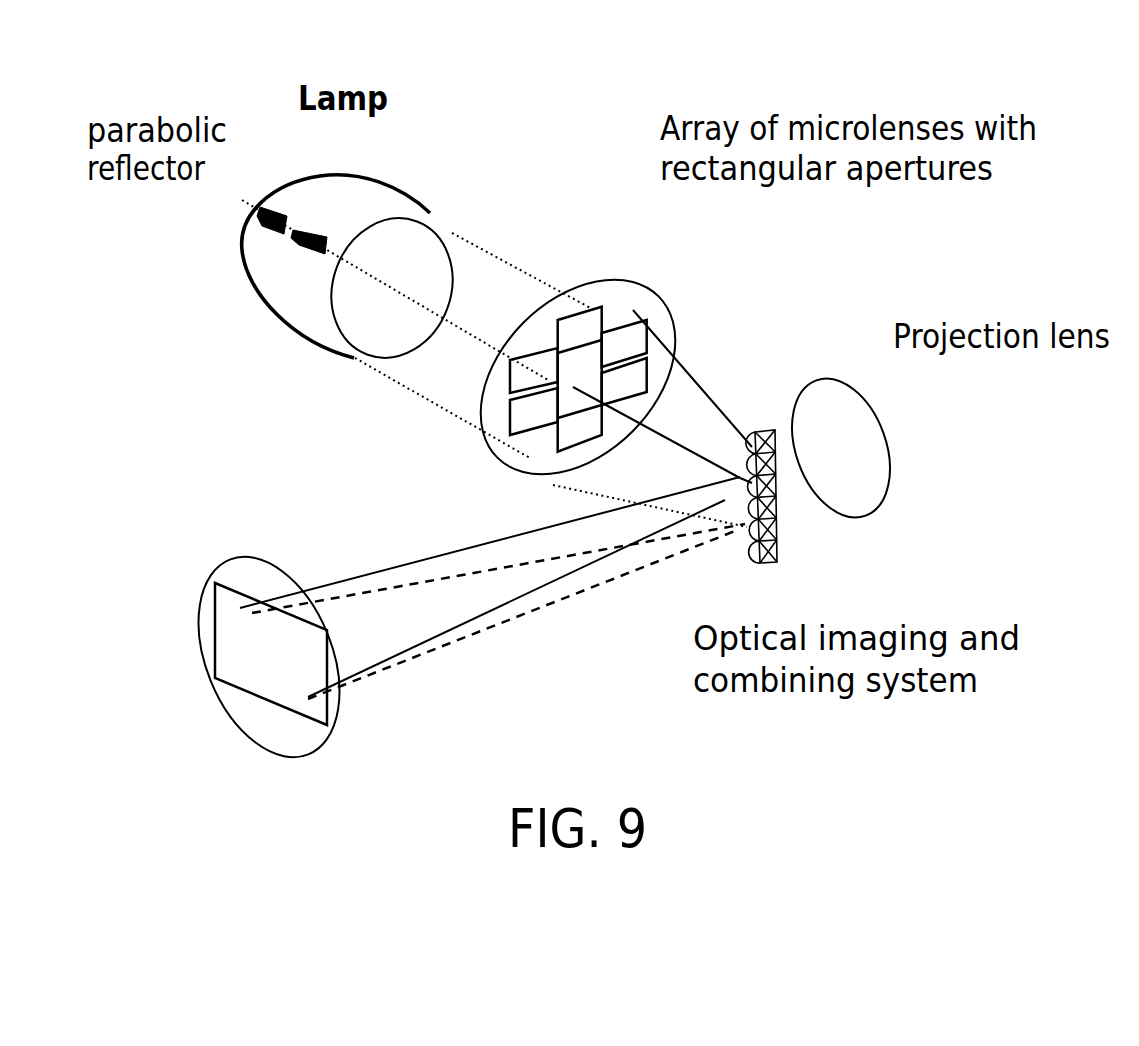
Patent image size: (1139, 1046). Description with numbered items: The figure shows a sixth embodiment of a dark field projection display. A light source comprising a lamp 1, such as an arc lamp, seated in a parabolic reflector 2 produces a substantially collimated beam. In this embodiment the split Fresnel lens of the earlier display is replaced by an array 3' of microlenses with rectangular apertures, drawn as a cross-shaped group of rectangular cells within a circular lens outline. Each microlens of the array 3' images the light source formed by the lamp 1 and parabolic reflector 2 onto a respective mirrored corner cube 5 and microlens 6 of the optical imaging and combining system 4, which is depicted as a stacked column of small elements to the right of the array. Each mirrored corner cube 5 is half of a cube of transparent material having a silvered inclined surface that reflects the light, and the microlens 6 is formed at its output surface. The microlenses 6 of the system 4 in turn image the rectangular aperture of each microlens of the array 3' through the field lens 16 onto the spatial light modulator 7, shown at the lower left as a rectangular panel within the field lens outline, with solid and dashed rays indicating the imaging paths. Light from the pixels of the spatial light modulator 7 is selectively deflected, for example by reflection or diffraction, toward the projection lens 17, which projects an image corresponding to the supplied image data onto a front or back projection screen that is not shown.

The lamp 1 is at (295, 222).
The parabolic reflector 2 is at (243, 242).
The array of microlenses with rectangular apertures 3' is at (644, 354).
The optical imaging and combining system 4 is at (778, 541).
The mirrored corner cube 5 is at (771, 429).
The microlens 6 is at (729, 572).
The spatial light modulator 7 is at (234, 667).
The field lens 16 is at (254, 565).
The projection lens 17 is at (882, 403).